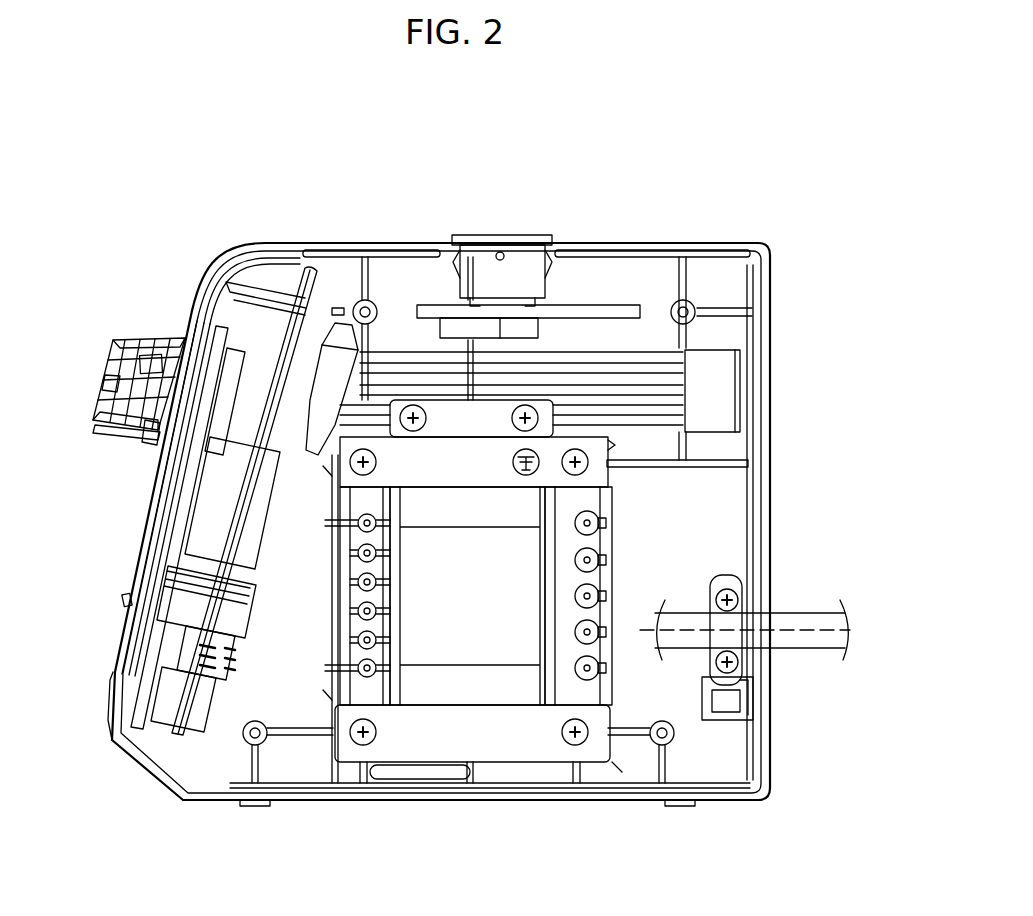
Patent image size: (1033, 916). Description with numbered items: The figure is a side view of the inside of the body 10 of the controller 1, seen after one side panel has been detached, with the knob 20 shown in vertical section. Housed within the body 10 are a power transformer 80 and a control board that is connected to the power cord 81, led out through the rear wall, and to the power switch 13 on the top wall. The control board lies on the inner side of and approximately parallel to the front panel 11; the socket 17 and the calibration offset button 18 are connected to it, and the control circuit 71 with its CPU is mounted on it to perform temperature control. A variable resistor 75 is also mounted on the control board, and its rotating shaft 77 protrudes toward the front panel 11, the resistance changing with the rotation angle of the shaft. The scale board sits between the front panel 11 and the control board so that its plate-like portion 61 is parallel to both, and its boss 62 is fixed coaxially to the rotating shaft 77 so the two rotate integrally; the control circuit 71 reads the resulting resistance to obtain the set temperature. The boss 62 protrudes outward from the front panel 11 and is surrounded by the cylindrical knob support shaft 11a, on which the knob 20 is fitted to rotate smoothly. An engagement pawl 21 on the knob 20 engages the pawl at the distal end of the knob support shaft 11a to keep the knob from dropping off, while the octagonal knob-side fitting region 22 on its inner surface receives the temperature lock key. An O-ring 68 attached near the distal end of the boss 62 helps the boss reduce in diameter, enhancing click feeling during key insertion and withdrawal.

The controller 1 is at (348, 184).
The body 10 is at (290, 243).
The front panel 11 is at (198, 298).
The knob support shaft 11a is at (118, 437).
The power switch 13 is at (482, 236).
The socket 17 is at (112, 680).
The calibration offset button 18 is at (125, 600).
The knob 20 is at (135, 337).
The engagement pawl 21 is at (148, 450).
The knob-side fitting region 22 is at (108, 385).
The plate-like portion 61 is at (177, 493).
The boss 62 is at (177, 352).
The O-ring 68 is at (152, 352).
The control circuit 71 is at (243, 541).
The variable resistor 75 is at (250, 280).
The rotating shaft 77 is at (212, 290).
The power transformer 80 is at (617, 530).
The power cord 81 is at (795, 612).